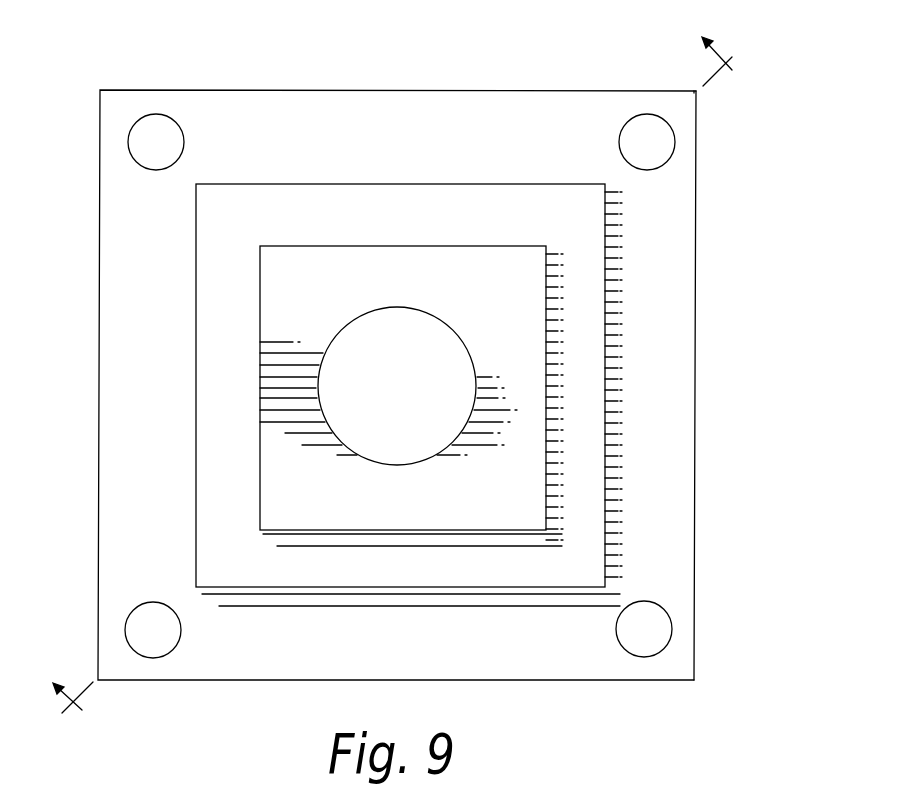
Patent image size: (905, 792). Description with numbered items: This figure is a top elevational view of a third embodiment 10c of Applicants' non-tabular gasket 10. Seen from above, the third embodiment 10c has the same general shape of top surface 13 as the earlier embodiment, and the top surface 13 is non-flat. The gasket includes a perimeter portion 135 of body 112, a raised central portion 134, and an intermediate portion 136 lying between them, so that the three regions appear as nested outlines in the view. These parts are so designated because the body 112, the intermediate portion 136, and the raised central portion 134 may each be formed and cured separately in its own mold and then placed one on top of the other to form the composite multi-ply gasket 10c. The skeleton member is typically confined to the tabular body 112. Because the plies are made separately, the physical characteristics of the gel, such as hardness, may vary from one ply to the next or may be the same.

The perimeter portion 135 is at (455, 118).
The intermediate portion 136 is at (385, 207).
The raised central portion 134 is at (333, 270).
The top surface 13 is at (270, 392).
The body 112 is at (677, 354).
The non-tabular gasket 10 is at (382, 362).
The third embodiment 10c is at (725, 118).